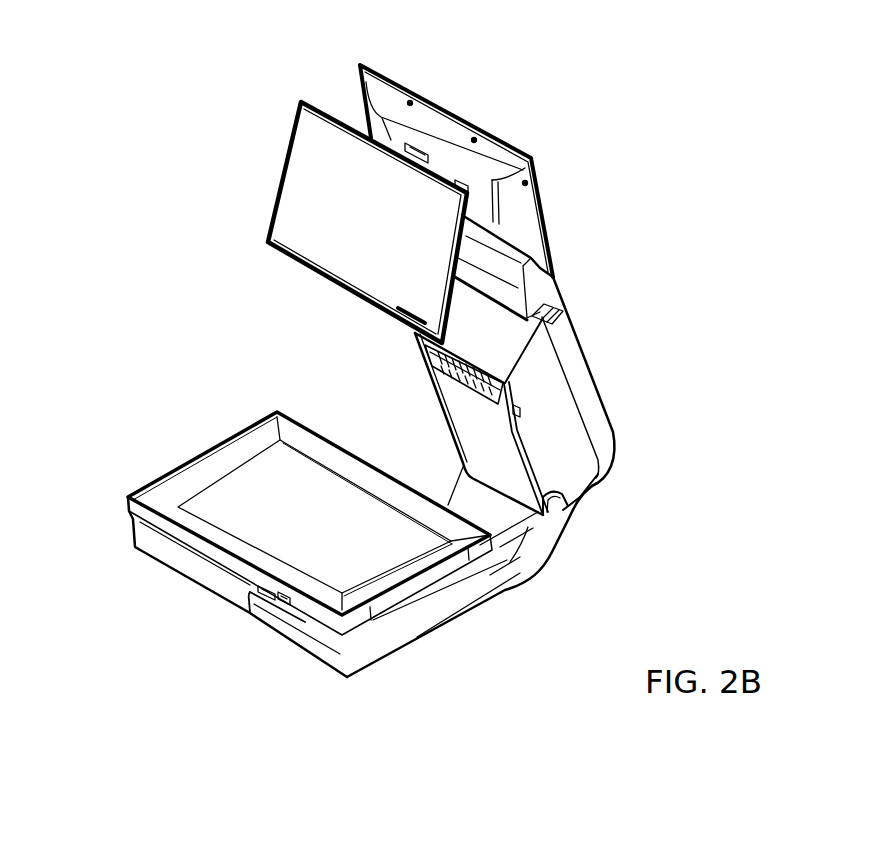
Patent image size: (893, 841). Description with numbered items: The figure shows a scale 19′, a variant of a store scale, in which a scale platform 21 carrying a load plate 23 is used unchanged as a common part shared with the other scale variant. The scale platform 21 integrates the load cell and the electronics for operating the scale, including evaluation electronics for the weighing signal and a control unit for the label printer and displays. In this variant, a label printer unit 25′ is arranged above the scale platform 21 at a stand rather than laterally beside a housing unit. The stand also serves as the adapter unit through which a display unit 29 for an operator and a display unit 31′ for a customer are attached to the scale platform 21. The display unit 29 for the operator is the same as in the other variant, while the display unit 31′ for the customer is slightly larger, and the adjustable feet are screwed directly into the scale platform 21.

The scale 19′ is at (206, 300).
The scale platform 21 is at (180, 558).
The load plate 23 is at (215, 453).
The label printer unit 25′ is at (552, 430).
The display unit for an operator 29 is at (308, 173).
The display unit for a customer 31′ is at (473, 122).